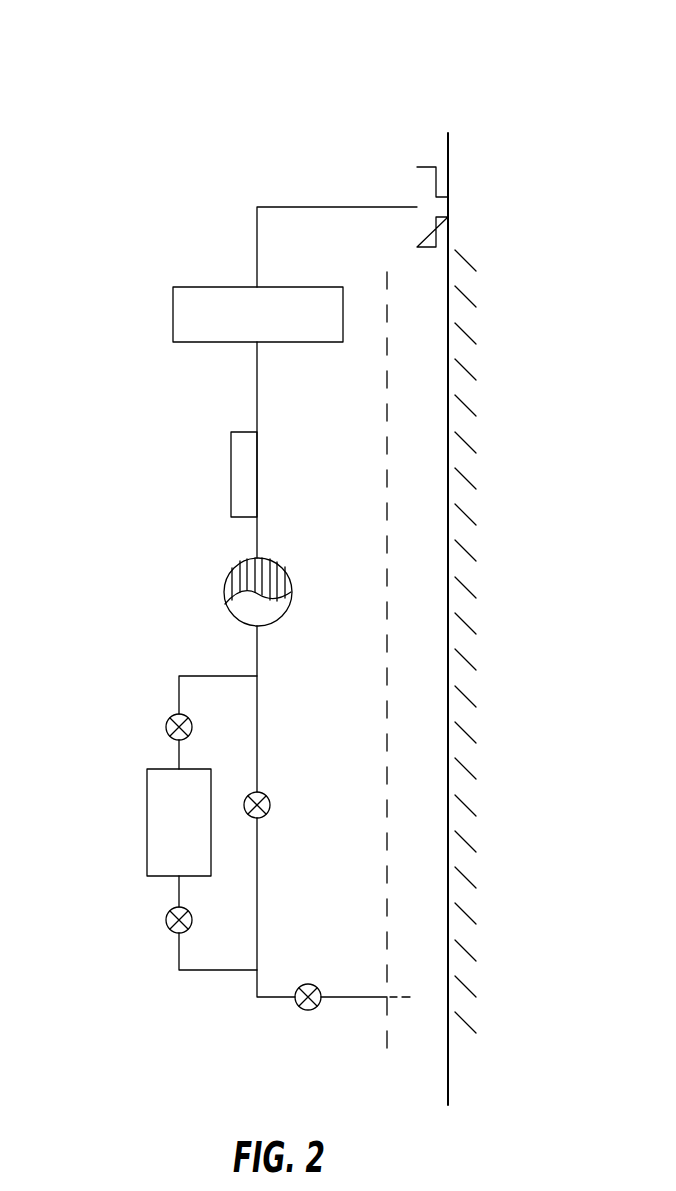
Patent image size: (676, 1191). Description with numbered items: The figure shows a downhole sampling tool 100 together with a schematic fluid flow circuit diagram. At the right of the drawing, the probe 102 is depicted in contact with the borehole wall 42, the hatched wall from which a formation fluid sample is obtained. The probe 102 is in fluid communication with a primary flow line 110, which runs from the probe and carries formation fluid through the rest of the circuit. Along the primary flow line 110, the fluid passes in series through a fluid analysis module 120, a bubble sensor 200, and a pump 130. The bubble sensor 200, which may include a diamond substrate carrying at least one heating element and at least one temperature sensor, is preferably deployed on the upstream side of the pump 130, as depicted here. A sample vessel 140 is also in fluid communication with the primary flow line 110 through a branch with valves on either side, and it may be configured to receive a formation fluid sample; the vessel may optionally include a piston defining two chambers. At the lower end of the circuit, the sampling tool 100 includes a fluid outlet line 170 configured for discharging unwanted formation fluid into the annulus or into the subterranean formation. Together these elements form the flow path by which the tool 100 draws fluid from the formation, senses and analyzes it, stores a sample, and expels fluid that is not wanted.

The sampling tool 100 is at (141, 66).
The probe 102 is at (428, 167).
The primary flow line 110 is at (273, 207).
The fluid analysis module 120 is at (277, 332).
The pump 130 is at (273, 565).
The sample vessel 140 is at (199, 837).
The fluid outlet line 170 is at (358, 997).
The bubble sensor 200 is at (231, 480).
The borehole wall 42 is at (448, 460).